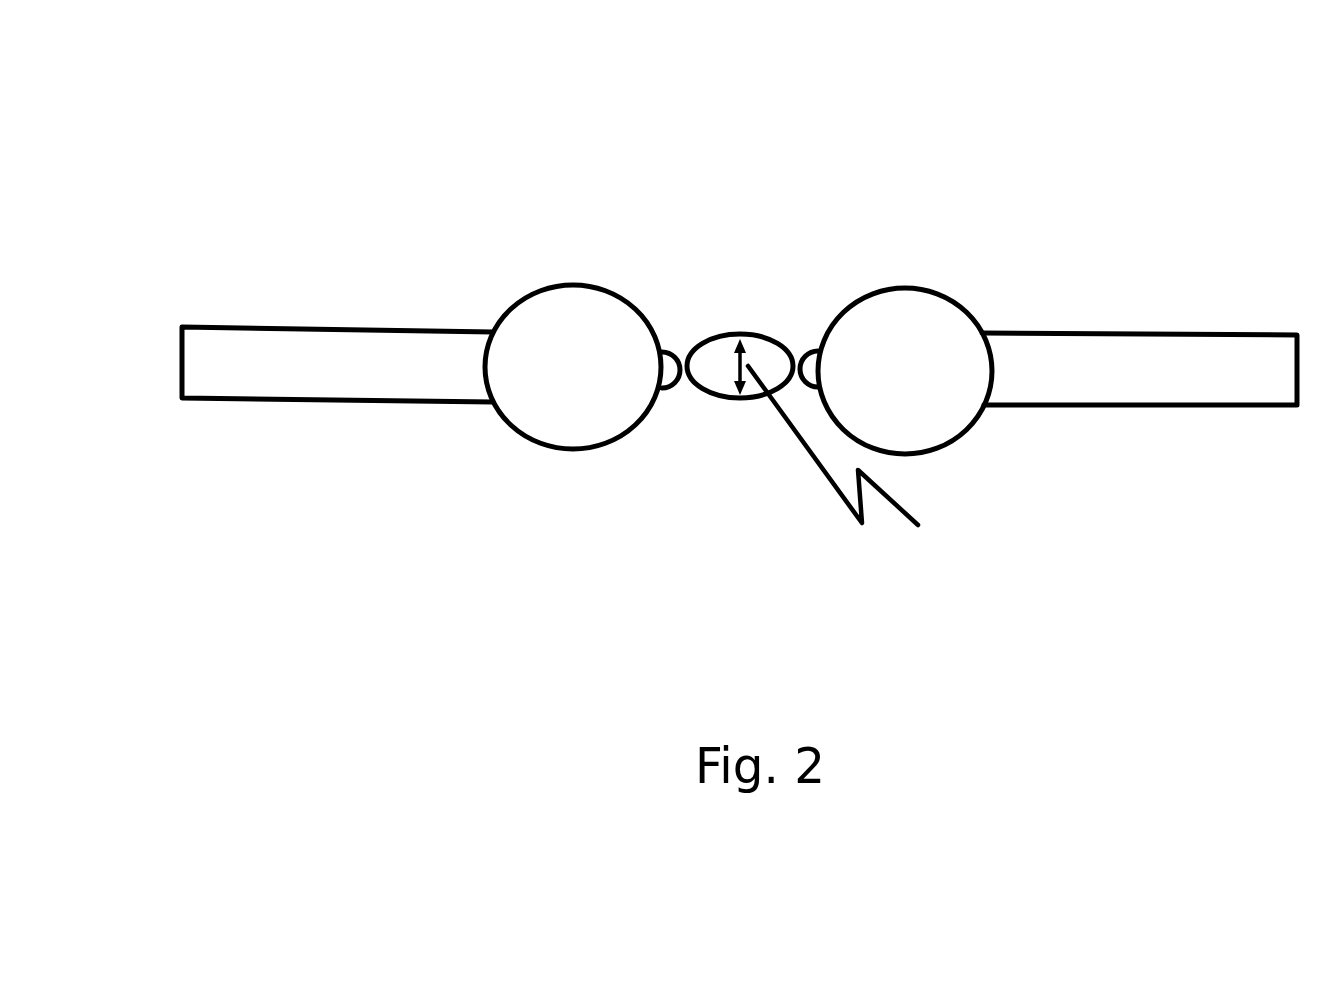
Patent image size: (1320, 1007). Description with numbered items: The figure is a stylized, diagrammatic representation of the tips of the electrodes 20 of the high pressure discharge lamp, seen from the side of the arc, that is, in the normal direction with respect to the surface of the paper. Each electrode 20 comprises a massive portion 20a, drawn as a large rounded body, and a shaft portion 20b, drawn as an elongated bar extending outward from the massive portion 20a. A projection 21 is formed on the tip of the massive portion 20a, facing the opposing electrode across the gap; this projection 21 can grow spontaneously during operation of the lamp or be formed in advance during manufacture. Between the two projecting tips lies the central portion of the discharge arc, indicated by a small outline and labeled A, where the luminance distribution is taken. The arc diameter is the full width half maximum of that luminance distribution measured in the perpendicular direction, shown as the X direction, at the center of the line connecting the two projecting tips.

The electrode 20 is at (739, 367).
The massive portion 20a is at (573, 453).
The shaft portion 20b is at (337, 466).
The projection 21 is at (696, 271).
The luminance distribution region A is at (967, 330).
The X direction X is at (740, 283).